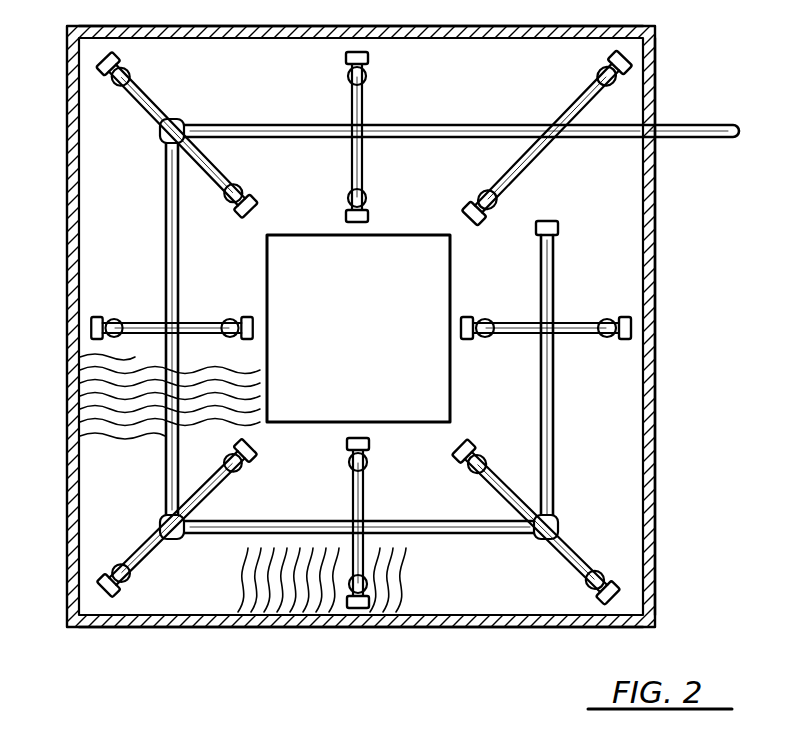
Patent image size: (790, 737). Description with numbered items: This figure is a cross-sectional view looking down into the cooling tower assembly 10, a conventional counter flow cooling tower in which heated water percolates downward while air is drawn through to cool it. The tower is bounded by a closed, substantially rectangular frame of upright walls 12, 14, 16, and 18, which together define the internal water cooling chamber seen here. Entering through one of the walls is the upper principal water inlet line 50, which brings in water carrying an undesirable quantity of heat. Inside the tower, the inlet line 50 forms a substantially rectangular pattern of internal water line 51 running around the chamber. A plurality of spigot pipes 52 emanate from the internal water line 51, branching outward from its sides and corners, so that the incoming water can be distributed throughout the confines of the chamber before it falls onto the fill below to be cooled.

The cooling tower assembly 10 is at (325, 735).
The upright wall 12 is at (68, 287).
The upright wall 14 is at (305, 627).
The upright wall 16 is at (655, 495).
The upright wall 18 is at (345, 27).
The upper principal water inlet line 50 is at (700, 123).
The internal water line 51 is at (225, 126).
The spigot pipes 52 is at (153, 117).